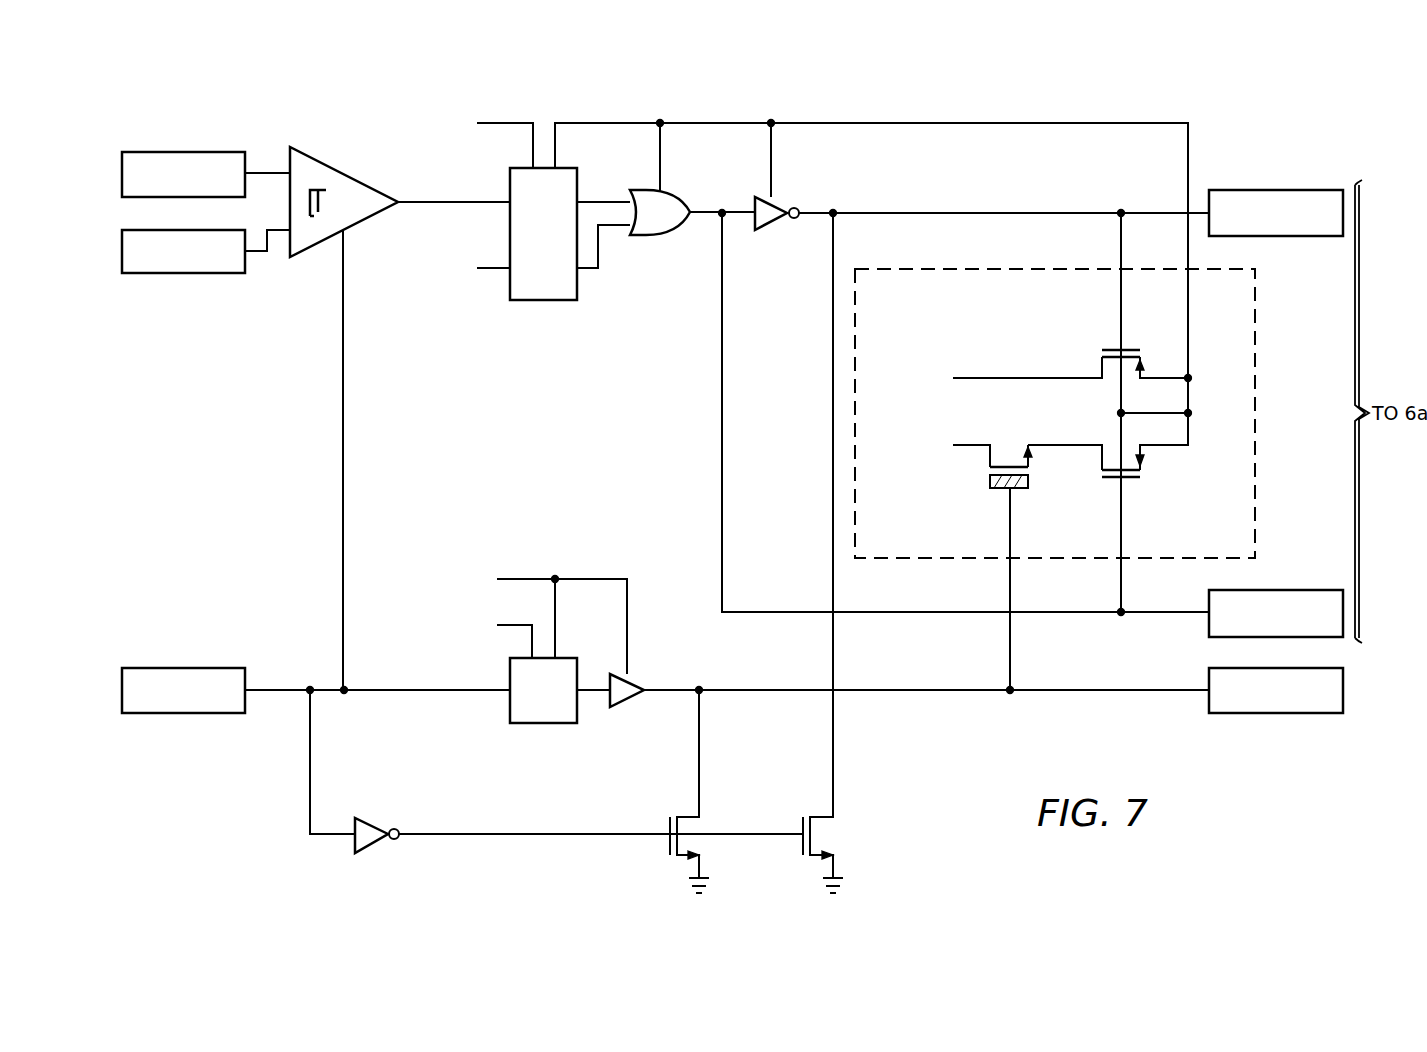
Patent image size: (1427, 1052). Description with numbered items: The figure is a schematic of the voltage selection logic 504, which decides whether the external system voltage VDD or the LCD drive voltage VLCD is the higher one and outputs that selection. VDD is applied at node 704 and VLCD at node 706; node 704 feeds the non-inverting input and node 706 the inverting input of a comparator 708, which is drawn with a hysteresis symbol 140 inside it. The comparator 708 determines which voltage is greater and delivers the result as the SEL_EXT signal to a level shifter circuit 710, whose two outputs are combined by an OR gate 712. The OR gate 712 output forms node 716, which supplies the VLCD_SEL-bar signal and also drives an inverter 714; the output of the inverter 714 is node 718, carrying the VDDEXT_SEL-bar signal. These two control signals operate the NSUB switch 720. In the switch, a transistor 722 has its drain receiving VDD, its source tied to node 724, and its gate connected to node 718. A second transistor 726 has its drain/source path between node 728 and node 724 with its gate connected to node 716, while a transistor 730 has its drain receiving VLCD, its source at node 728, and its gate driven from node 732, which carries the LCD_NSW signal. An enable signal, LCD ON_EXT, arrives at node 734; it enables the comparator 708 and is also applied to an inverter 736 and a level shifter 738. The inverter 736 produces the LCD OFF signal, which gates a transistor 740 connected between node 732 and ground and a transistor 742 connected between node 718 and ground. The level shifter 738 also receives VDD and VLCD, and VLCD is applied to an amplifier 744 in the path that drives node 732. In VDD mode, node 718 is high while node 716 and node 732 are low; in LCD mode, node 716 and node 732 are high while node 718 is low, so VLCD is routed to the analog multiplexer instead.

The voltage selection logic 504 is at (1275, 88).
The node 704 is at (182, 152).
The node 706 is at (182, 273).
The comparator 708 is at (312, 153).
The hysteresis comparator 140 is at (338, 203).
The level shifter circuit 710 is at (545, 300).
The OR gate 712 is at (662, 236).
The inverter 714 is at (775, 225).
The node 716 is at (700, 186).
The node 718 is at (1283, 190).
The NSUB switch 720 is at (1268, 400).
The transistor 722 is at (1133, 349).
The node 724 is at (1195, 373).
The second transistor 726 is at (1135, 480).
The node 728 is at (1055, 450).
The transistor 730 is at (997, 490).
The node 732 is at (1283, 713).
The node 734 is at (190, 716).
The inverter 736 is at (375, 850).
The level shifter 738 is at (545, 723).
The transistor 740 is at (668, 848).
The transistor 742 is at (801, 848).
The amplifier 744 is at (628, 702).